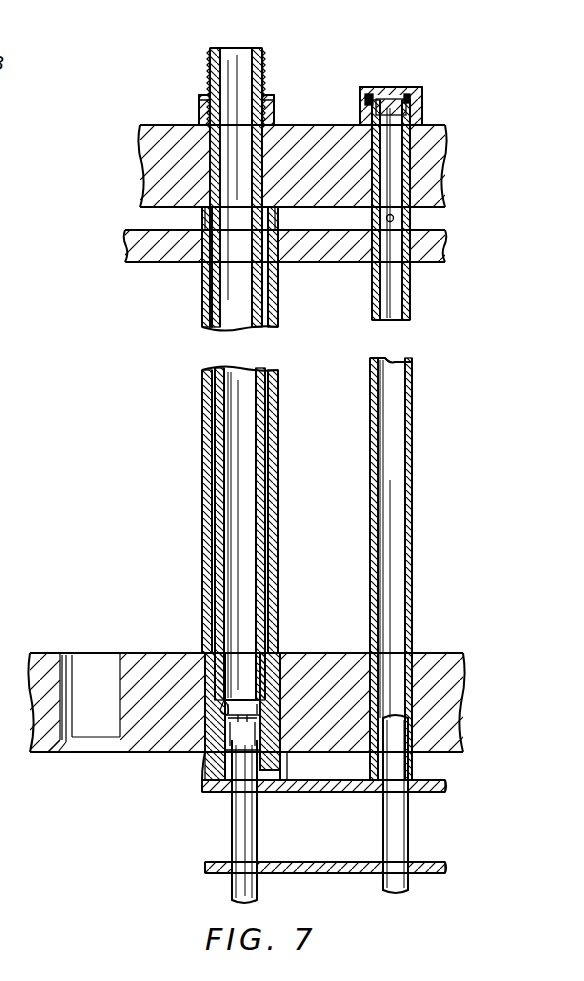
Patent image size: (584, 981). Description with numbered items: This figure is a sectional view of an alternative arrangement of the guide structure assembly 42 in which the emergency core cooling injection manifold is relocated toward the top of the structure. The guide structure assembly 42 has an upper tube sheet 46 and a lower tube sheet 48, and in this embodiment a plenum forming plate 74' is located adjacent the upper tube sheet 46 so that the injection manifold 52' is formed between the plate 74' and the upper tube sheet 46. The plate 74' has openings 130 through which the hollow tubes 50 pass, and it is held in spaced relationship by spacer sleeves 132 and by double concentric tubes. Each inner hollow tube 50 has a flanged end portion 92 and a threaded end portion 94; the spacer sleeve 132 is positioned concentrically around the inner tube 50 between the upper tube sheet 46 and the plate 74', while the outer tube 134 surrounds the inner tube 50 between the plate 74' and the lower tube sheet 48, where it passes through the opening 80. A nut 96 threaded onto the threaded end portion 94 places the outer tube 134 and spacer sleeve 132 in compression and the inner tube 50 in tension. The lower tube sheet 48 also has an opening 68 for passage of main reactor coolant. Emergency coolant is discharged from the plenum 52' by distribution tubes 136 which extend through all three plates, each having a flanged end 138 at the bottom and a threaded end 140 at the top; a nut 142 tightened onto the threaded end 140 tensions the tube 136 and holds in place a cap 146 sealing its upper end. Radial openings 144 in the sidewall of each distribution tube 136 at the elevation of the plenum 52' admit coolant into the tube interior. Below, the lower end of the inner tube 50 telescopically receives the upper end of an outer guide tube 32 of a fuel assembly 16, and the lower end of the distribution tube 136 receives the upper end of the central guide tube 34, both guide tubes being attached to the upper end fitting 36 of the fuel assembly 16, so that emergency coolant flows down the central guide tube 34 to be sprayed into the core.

The fuel assembly 16 is at (332, 873).
The outer guide tube 32 is at (257, 840).
The central guide tube 34 is at (408, 840).
The upper end fitting 36 is at (204, 864).
The guide structure assembly 42 is at (336, 125).
The upper tube sheet 46 is at (166, 125).
The lower tube sheet 48 is at (336, 653).
The hollow tube 50 is at (205, 396).
The injection manifold 52' is at (362, 215).
The opening 68 is at (114, 655).
The plenum forming plate 74' is at (279, 265).
The opening 80 is at (226, 654).
The flanged end portion 92 is at (204, 768).
The threaded end portion 94 is at (262, 72).
The nut 96 is at (274, 108).
The opening 130 is at (254, 260).
The spacer sleeve 132 is at (205, 218).
The outer tube 134 is at (278, 402).
The distribution tube 136 is at (412, 432).
The flanged end 138 is at (416, 778).
The threaded end 140 is at (422, 109).
The nut 142 is at (412, 100).
The radial opening 144 is at (393, 218).
The cap 146 is at (378, 96).